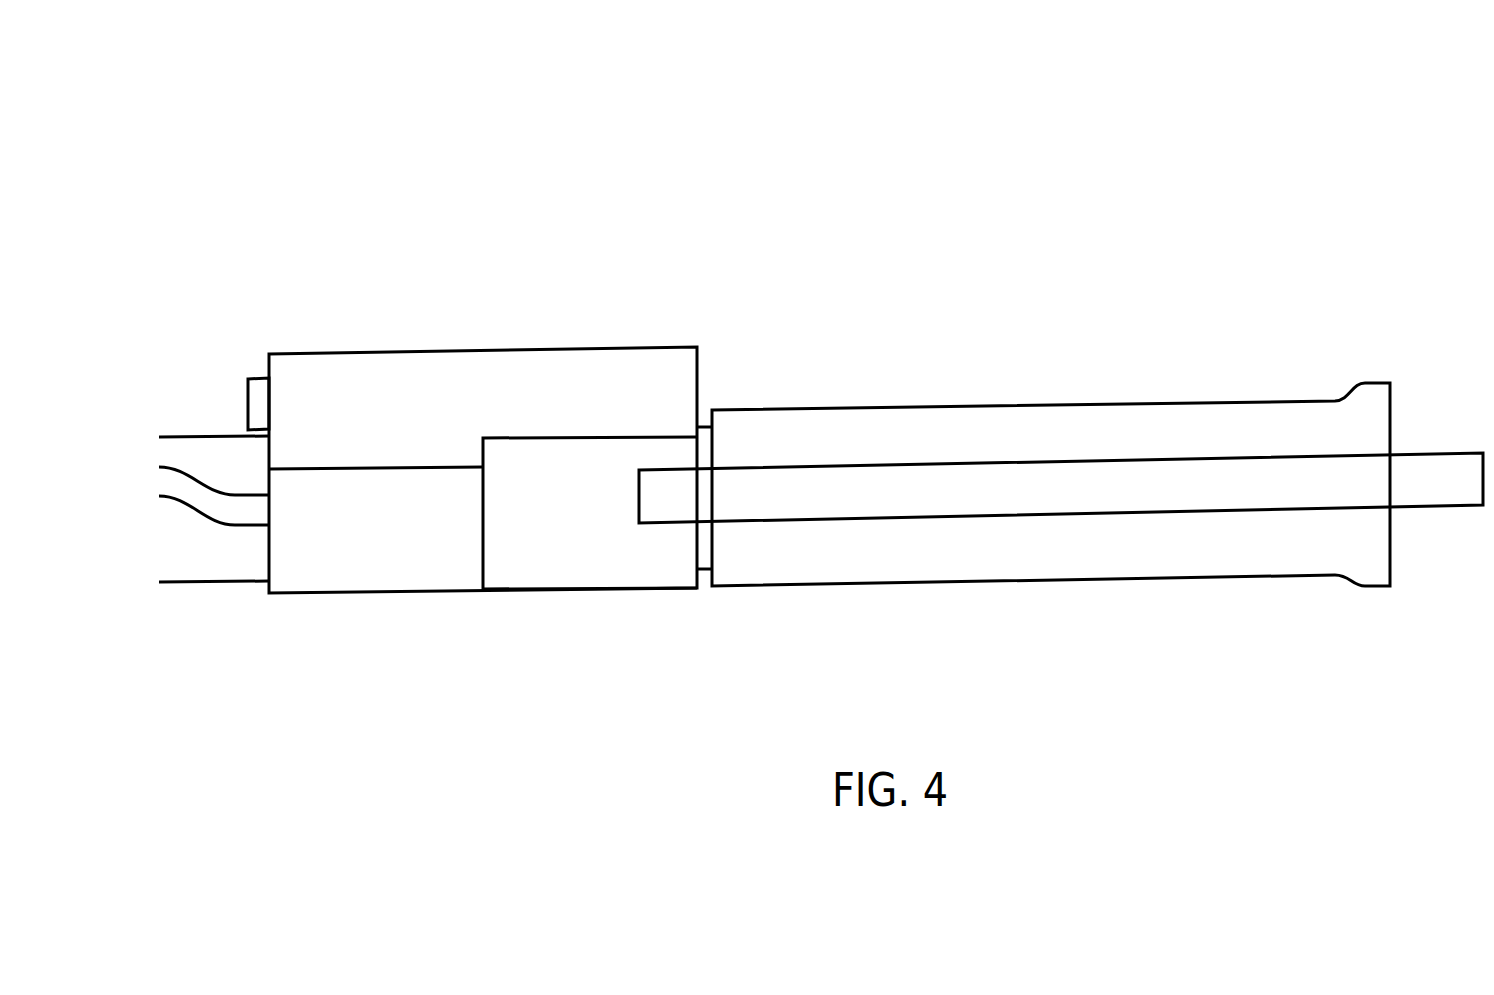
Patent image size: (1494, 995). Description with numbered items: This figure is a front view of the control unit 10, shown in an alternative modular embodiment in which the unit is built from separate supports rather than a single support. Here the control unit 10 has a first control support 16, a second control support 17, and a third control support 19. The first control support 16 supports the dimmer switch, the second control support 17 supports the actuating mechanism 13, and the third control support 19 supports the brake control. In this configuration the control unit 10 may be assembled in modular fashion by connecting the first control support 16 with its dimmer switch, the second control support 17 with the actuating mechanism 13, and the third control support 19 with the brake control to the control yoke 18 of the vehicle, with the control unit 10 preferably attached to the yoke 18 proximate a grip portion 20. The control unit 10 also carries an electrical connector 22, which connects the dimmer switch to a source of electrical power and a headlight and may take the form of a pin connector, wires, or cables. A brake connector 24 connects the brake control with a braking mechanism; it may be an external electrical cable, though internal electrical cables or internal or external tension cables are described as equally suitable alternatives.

The control unit 10 is at (821, 396).
The actuating mechanism 13 is at (1447, 450).
The first control support 16 is at (365, 347).
The second control support 17 is at (596, 434).
The control yoke 18 is at (253, 583).
The third control support 19 is at (445, 463).
The grip portion 20 is at (923, 403).
The electrical connector 22 is at (256, 375).
The brake connector 24 is at (209, 481).